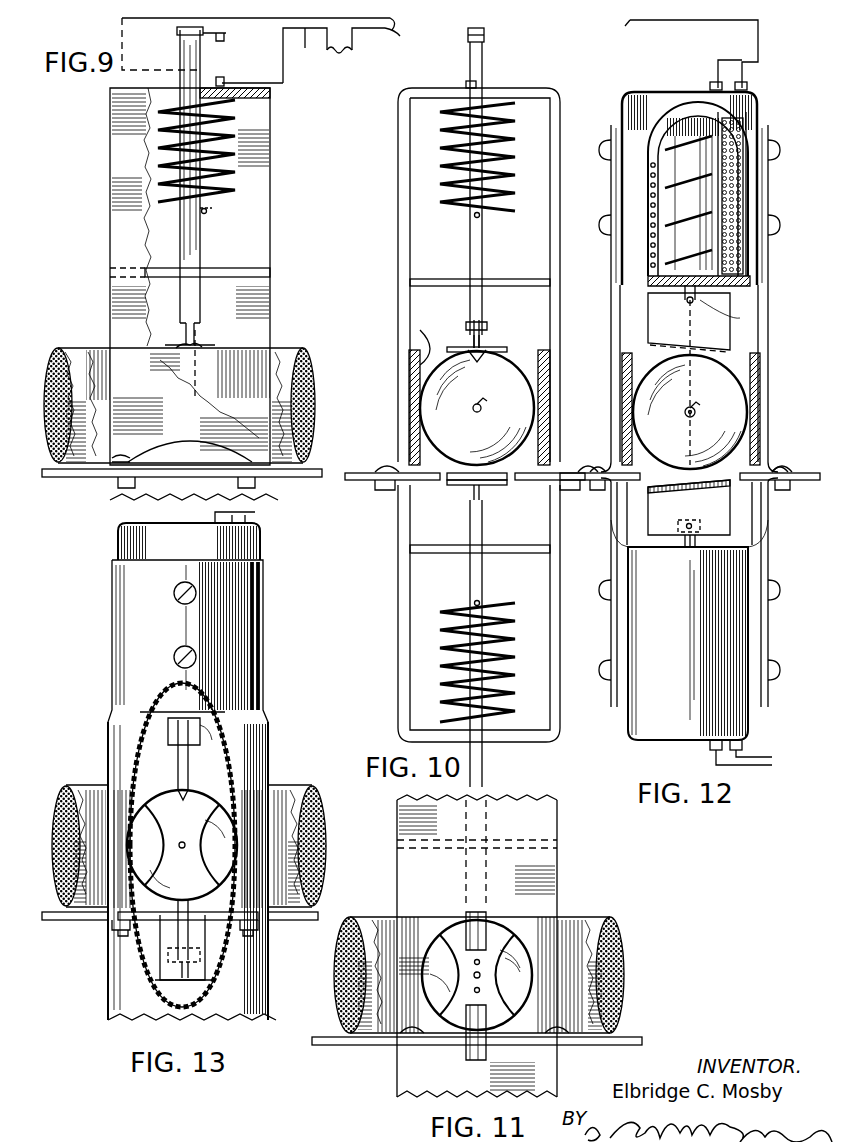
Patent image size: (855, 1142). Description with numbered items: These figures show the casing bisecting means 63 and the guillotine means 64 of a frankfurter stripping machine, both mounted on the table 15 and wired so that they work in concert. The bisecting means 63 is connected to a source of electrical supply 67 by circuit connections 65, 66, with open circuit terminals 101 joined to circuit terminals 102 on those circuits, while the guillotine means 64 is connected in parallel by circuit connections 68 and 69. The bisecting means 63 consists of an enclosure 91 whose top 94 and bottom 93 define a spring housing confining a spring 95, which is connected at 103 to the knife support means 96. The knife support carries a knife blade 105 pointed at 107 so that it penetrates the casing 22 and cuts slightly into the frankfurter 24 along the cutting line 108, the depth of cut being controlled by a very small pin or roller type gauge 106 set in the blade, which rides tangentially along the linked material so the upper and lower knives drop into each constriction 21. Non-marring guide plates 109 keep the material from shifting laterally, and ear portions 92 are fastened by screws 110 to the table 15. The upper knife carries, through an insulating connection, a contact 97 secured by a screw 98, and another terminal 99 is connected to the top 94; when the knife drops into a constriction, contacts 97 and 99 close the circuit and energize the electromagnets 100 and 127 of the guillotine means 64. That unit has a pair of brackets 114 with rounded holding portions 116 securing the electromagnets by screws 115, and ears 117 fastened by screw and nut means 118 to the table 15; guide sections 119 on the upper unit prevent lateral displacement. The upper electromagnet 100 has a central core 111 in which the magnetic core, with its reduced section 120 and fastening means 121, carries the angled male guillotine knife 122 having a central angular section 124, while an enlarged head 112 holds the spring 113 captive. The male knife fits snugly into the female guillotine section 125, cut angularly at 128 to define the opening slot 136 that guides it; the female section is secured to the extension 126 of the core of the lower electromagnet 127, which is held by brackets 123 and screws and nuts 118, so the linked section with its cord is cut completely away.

In FIG. 9, the table 15 is at (290, 480).
In FIG. 10, the table 15 is at (355, 482).
In FIG. 11, the table 15 is at (338, 1046).
In FIG. 12, the table 15 is at (812, 485).
In FIG. 13, the table 15 is at (65, 922).
In FIG. 10, the constriction 21 is at (482, 394).
In FIG. 11, the constriction 21 is at (482, 980).
In FIG. 12, the constriction 21 is at (694, 404).
In FIG. 13, the constriction 21 is at (170, 800).
In FIG. 9, the casing 22 is at (312, 362).
In FIG. 11, the casing 22 is at (625, 990).
In FIG. 13, the casing 22 is at (316, 795).
In FIG. 9, the frankfurter 24 is at (54, 430).
In FIG. 9, the casing bisecting means 63 is at (275, 203).
In FIG. 10, the casing bisecting means 63 is at (395, 238).
In FIG. 12, the guillotine means 64 is at (764, 102).
In FIG. 13, the guillotine means 64 is at (269, 657).
In FIG. 9, the circuit connection 65 is at (303, 55).
In FIG. 12, the circuit connection 65 is at (706, 26).
In FIG. 9, the circuit connection 66 is at (160, 36).
In FIG. 12, the circuit connection 66 is at (760, 44).
In FIG. 9, the source of electrical supply 67 is at (343, 52).
In FIG. 12, the circuit connection 68 is at (758, 766).
In FIG. 12, the circuit connection 69 is at (772, 757).
In FIG. 9, the enclosure 91 is at (272, 250).
In FIG. 10, the enclosure 91 is at (398, 170).
In FIG. 11, the enclosure 91 is at (545, 885).
In FIG. 9, the ear portions 92 is at (115, 474).
In FIG. 10, the ear portions 92 is at (375, 472).
In FIG. 11, the ear portions 92 is at (405, 1040).
In FIG. 9, the bottom 93 is at (266, 270).
In FIG. 10, the bottom 93 is at (508, 278).
In FIG. 11, the bottom 93 is at (540, 840).
In FIG. 9, the top 94 is at (268, 102).
In FIG. 10, the top 94 is at (514, 94).
In FIG. 9, the spring 95 is at (232, 170).
In FIG. 10, the spring 95 is at (507, 158).
In FIG. 9, the knife support means 96 is at (202, 258).
In FIG. 10, the knife support means 96 is at (468, 236).
In FIG. 11, the knife support means 96 is at (476, 852).
In FIG. 9, the contact 97 is at (226, 32).
In FIG. 10, the contact 97 is at (485, 34).
In FIG. 9, the screw 98 is at (178, 26).
In FIG. 10, the screw 98 is at (467, 30).
In FIG. 9, the terminal 99 is at (236, 82).
In FIG. 10, the terminal 99 is at (466, 84).
In FIG. 12, the electromagnet 100 is at (636, 108).
In FIG. 9, the circuit terminals 101 is at (409, 37).
In FIG. 12, the circuit terminals 102 is at (633, 26).
In FIG. 9, the spring connection point 103 is at (206, 213).
In FIG. 10, the spring connection point 103 is at (481, 216).
In FIG. 9, the knife blade 105 is at (196, 340).
In FIG. 10, the knife blade 105 is at (470, 340).
In FIG. 11, the knife blade 105 is at (465, 960).
In FIG. 9, the gauge 106 is at (178, 352).
In FIG. 10, the gauge 106 is at (500, 345).
In FIG. 11, the gauge 106 is at (488, 960).
In FIG. 9, the point 107 is at (209, 399).
In FIG. 9, the cutting line 108 is at (204, 344).
In FIG. 12, the cutting line 108 is at (688, 440).
In FIG. 9, the guide plates 109 is at (95, 345).
In FIG. 10, the guide plates 109 is at (414, 335).
In FIG. 11, the guide plates 109 is at (565, 920).
In FIG. 12, the guide plates 109 is at (610, 400).
In FIG. 9, the screws 110 is at (190, 444).
In FIG. 10, the screws 110 is at (385, 468).
In FIG. 11, the screws 110 is at (408, 1028).
In FIG. 12, the screws 110 is at (583, 465).
In FIG. 12, the core 111 is at (748, 150).
In FIG. 12, the enlarged head 112 is at (690, 125).
In FIG. 12, the spring 113 is at (700, 185).
In FIG. 12, the brackets 114 is at (618, 290).
In FIG. 13, the brackets 114 is at (265, 610).
In FIG. 12, the screws 115 is at (606, 225).
In FIG. 13, the screws 115 is at (163, 625).
In FIG. 12, the holding portions 116 is at (756, 135).
In FIG. 12, the ears 117 is at (596, 490).
In FIG. 13, the ears 117 is at (112, 925).
In FIG. 12, the screw and nut means 118 is at (590, 468).
In FIG. 13, the screw and nut means 118 is at (123, 938).
In FIG. 12, the guide sections 119 is at (791, 371).
In FIG. 13, the guide sections 119 is at (96, 795).
In FIG. 12, the reduced section 120 is at (730, 330).
In FIG. 13, the reduced section 120 is at (213, 744).
In FIG. 12, the fastening means 121 is at (689, 318).
In FIG. 13, the fastening means 121 is at (168, 720).
In FIG. 12, the male guillotine knife 122 is at (648, 322).
In FIG. 13, the male guillotine knife 122 is at (172, 742).
In FIG. 12, the brackets 123 is at (615, 548).
In FIG. 13, the brackets 123 is at (110, 1010).
In FIG. 13, the central angular section 124 is at (189, 760).
In FIG. 12, the female guillotine section 125 is at (722, 508).
In FIG. 13, the female guillotine section 125 is at (160, 960).
In FIG. 12, the extension 126 is at (672, 540).
In FIG. 13, the extension 126 is at (210, 982).
In FIG. 12, the electromagnet 127 is at (626, 722).
In FIG. 12, the angular cut 128 is at (648, 495).
In FIG. 13, the angular cut 128 is at (170, 945).
In FIG. 13, the opening slot 136 is at (189, 920).